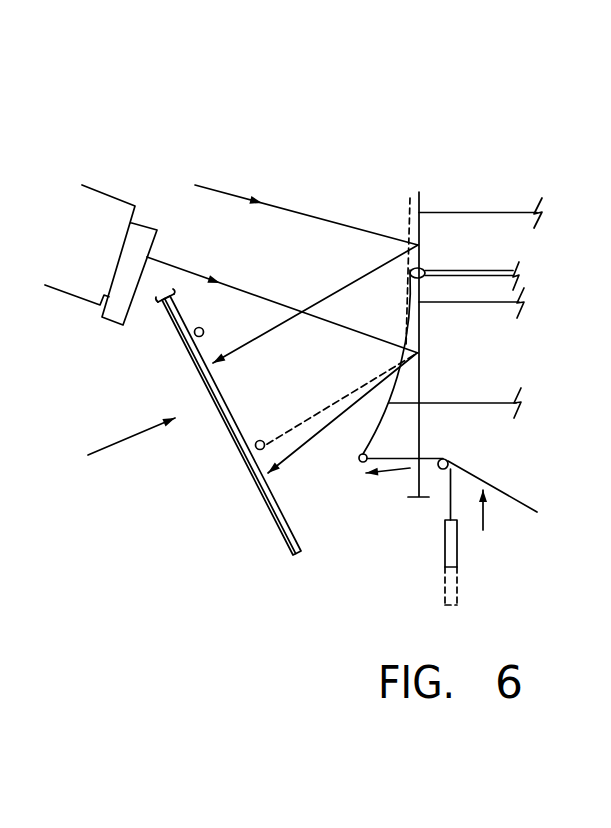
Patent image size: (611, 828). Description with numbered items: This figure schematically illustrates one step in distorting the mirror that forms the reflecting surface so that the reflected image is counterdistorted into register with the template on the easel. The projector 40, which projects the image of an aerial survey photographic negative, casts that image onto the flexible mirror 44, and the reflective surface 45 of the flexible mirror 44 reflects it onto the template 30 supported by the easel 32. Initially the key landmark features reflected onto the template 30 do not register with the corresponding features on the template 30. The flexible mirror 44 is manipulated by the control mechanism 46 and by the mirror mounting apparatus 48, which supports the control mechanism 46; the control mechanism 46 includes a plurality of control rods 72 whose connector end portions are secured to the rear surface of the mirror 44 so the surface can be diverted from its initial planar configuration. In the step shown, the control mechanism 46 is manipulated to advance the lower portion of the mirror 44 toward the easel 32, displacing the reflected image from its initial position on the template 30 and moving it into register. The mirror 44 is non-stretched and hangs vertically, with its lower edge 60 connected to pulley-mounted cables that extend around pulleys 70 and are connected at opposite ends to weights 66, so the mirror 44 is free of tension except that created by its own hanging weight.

The template 30 is at (189, 330).
The easel 32 is at (113, 443).
The projector 40 is at (116, 178).
The flexible mirror 44 is at (378, 431).
The reflective surface 45 is at (366, 453).
The control mechanism 46 is at (498, 180).
The mirror mounting apparatus 48 is at (472, 463).
The lower edge 60 is at (450, 507).
The weights 66 is at (455, 546).
The pulleys 70 is at (509, 500).
The control rods 72 is at (455, 212).